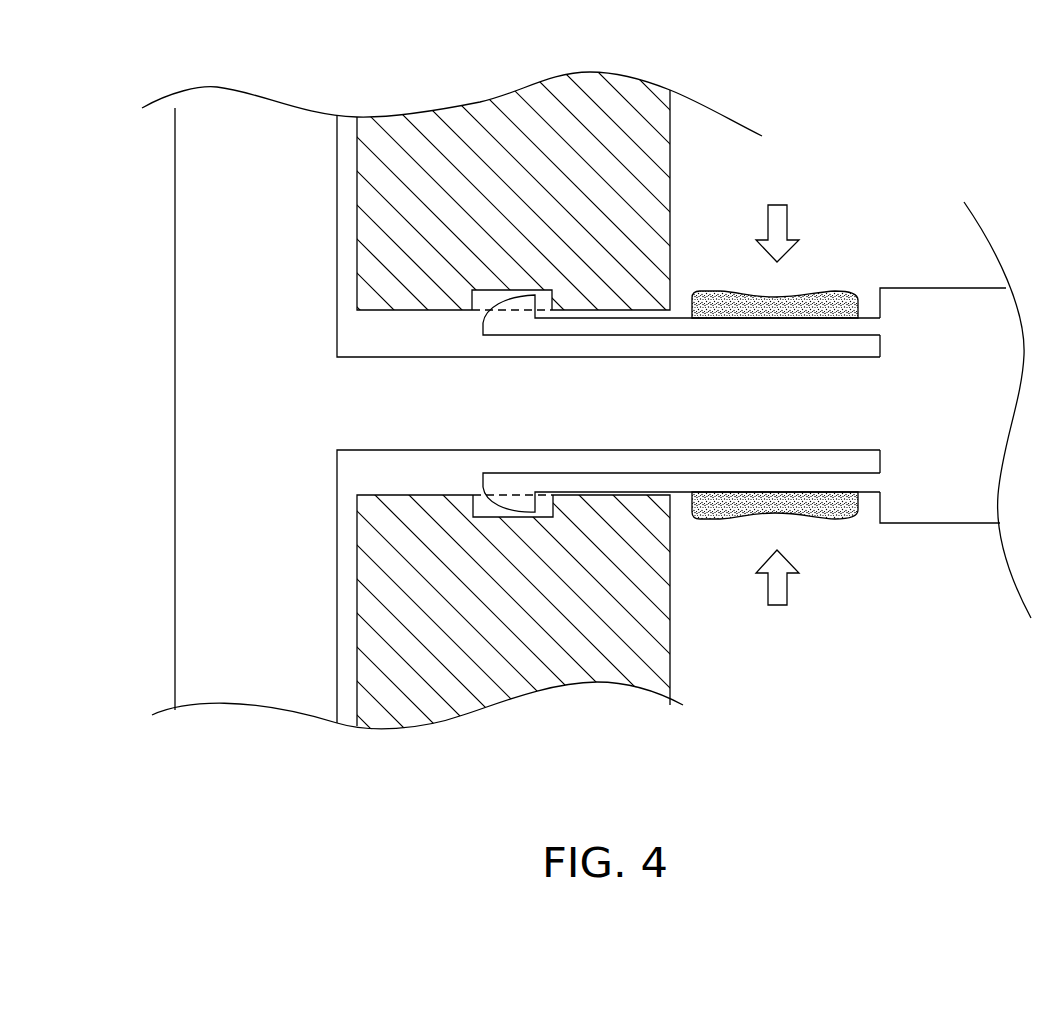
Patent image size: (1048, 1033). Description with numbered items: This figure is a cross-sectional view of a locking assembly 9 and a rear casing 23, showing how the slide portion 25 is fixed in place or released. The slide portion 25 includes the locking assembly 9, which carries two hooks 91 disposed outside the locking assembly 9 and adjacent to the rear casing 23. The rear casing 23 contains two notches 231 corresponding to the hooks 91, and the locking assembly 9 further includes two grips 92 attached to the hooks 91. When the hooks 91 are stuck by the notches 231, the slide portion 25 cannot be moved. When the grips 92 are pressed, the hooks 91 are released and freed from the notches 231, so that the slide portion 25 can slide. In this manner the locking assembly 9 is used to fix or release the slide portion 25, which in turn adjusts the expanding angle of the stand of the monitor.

The locking assembly 9 is at (936, 423).
The rear casing 23 is at (563, 630).
The slide portion 25 is at (247, 570).
The hooks 91 is at (528, 503).
The grips 92 is at (748, 497).
The notches 231 is at (476, 272).